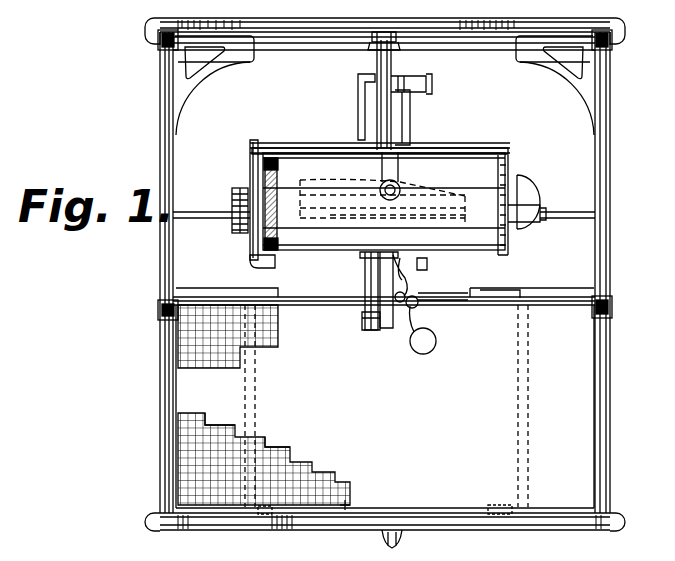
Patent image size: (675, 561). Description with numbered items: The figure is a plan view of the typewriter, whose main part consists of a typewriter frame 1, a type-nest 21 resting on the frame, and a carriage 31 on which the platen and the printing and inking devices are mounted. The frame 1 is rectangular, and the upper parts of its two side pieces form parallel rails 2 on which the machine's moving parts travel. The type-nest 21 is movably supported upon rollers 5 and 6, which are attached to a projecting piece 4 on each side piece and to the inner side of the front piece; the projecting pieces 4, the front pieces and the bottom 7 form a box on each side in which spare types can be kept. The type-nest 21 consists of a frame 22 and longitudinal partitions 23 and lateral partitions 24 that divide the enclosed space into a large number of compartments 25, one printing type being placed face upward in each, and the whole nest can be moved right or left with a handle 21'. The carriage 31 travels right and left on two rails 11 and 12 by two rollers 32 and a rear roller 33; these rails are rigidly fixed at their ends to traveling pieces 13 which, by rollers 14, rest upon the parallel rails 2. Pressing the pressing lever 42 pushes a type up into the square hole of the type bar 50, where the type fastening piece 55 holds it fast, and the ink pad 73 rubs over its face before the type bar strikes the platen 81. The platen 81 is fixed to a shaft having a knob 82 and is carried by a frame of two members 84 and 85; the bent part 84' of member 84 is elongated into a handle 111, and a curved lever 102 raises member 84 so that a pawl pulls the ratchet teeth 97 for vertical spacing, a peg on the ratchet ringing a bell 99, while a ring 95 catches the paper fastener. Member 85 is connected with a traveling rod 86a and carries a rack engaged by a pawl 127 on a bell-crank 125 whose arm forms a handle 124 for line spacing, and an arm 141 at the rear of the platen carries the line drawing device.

The typewriter frame 1 is at (250, 523).
The parallel rails 2 is at (165, 250).
The projecting piece 4 is at (236, 290).
The roller 5 is at (498, 290).
The roller 6 is at (496, 508).
The bottom 7 is at (478, 40).
The rail 11 is at (260, 50).
The rail 12 is at (198, 220).
The traveling piece 13 is at (178, 128).
The roller 14 is at (160, 48).
The type-nest 21 is at (385, 406).
The handle 21' is at (366, 545).
The frame 22 is at (352, 507).
The longitudinal partition 23 is at (184, 413).
The lateral partition 24 is at (208, 430).
The compartment 25 is at (240, 440).
The carriage 31 is at (392, 72).
The roller 32 is at (326, 230).
The roller 33 is at (370, 52).
The pressing lever 42 is at (411, 345).
The type bar 50 is at (370, 284).
The type fastening piece 55 is at (362, 310).
The ink pad 73 is at (364, 330).
The platen 81 is at (385, 195).
The knob 82 is at (236, 188).
The platen frame member 84 is at (380, 134).
The bent part 84' is at (254, 185).
The platen frame member 85 is at (274, 146).
The traveling rod 86a is at (358, 90).
The ring 95 is at (280, 166).
The teeth 97 is at (522, 226).
The bell 99 is at (530, 182).
The curved lever 102 is at (418, 112).
The handle 111 is at (272, 266).
The handle 124 is at (446, 302).
The bell-crank 125 is at (416, 280).
The pawl 127 is at (448, 218).
The arm 141 is at (382, 180).